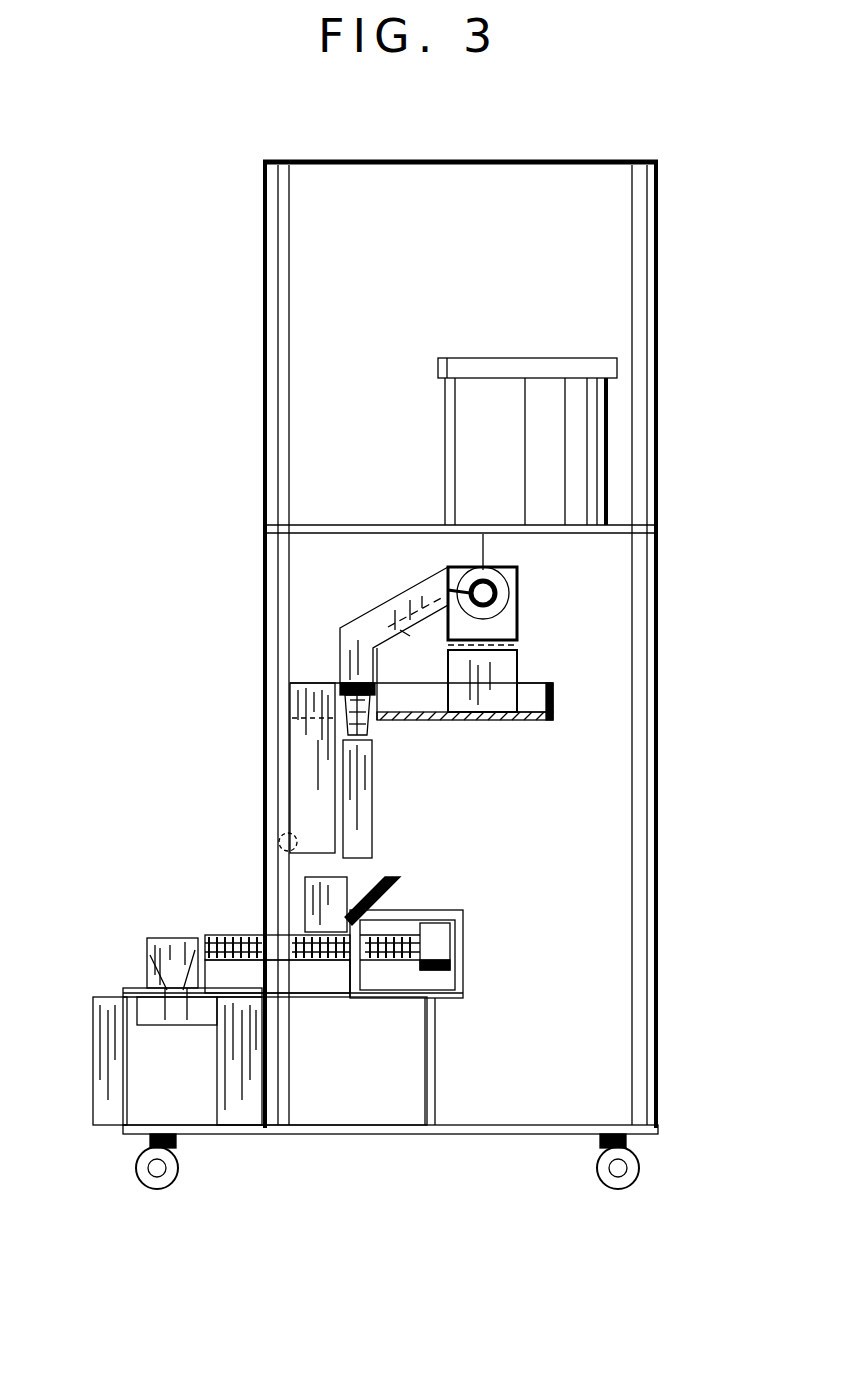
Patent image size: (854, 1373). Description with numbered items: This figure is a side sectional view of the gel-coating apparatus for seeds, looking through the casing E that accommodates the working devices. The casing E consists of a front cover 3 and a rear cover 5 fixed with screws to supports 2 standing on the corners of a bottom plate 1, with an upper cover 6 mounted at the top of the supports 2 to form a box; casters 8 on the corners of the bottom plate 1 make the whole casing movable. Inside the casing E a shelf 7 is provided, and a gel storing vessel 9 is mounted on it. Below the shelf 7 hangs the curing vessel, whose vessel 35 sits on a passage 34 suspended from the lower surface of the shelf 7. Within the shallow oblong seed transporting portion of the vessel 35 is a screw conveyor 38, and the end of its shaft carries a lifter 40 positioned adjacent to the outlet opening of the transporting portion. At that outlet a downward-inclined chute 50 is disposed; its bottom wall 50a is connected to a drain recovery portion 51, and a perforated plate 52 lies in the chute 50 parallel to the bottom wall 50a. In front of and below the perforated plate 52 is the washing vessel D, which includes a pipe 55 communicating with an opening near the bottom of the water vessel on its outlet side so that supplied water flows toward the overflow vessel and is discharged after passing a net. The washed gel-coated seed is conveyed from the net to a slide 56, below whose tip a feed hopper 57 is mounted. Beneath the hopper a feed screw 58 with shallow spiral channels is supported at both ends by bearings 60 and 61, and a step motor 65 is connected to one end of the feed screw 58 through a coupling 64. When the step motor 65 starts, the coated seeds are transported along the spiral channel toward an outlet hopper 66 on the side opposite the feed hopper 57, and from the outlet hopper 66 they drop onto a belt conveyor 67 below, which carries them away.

The bottom plate 1 is at (347, 1134).
The supports 2 is at (278, 562).
The front cover 3 is at (263, 640).
The rear cover 5 is at (660, 648).
The upper cover 6 is at (485, 160).
The shelf 7 is at (612, 530).
The casters 8 is at (135, 1172).
The gel storing vessel 9 is at (597, 440).
The passage 34 is at (525, 722).
The vessel 35 is at (520, 612).
The screw conveyor 38 is at (518, 575).
The lifter 40 is at (483, 575).
The chute 50 is at (372, 620).
The bottom wall 50a is at (407, 633).
The drain recovery portion 51 is at (330, 732).
The perforated plate 52 is at (388, 627).
The pipe 55 is at (280, 842).
The slide 56 is at (365, 790).
The feed hopper 57 is at (365, 880).
The feed screw 58 is at (235, 935).
The bearing 60 is at (200, 968).
The bearing 61 is at (356, 1000).
The coupling 64 is at (390, 965).
The step motor 65 is at (445, 935).
The outlet hopper 66 is at (158, 945).
The belt conveyor 67 is at (158, 1000).
The washing vessel D is at (300, 777).
The casing E is at (660, 228).